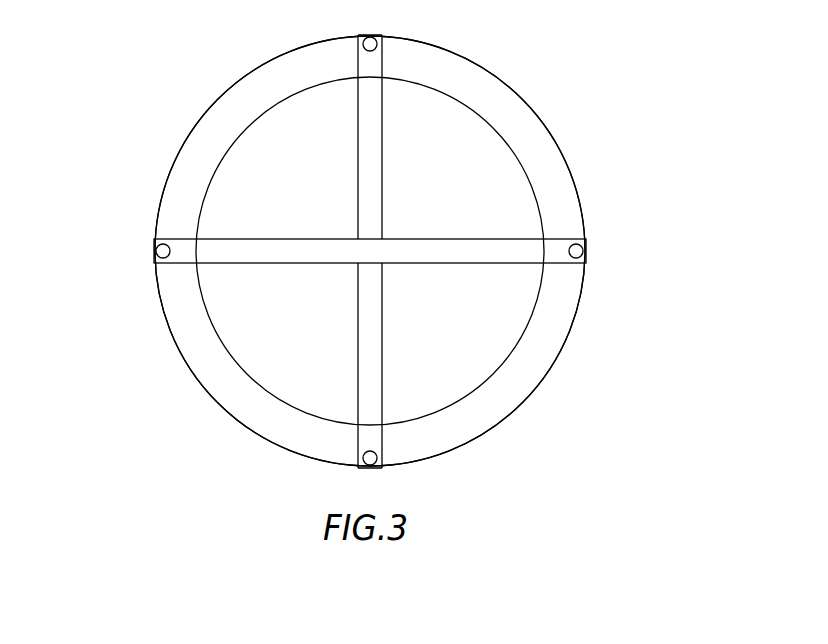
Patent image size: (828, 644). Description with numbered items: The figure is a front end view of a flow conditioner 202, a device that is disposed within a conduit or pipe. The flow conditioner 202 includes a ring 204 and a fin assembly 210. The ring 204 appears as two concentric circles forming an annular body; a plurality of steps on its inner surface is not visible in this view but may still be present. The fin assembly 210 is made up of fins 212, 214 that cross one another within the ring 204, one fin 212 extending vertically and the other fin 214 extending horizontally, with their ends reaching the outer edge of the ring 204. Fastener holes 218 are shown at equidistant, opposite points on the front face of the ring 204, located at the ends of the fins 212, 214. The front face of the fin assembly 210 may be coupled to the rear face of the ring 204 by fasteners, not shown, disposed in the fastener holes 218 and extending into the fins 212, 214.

The flow conditioner 202 is at (174, 360).
The ring 204 is at (556, 126).
The fin assembly 210 is at (421, 251).
The fin 212 is at (387, 124).
The fin 214 is at (425, 269).
The fastener holes 218 is at (588, 243).